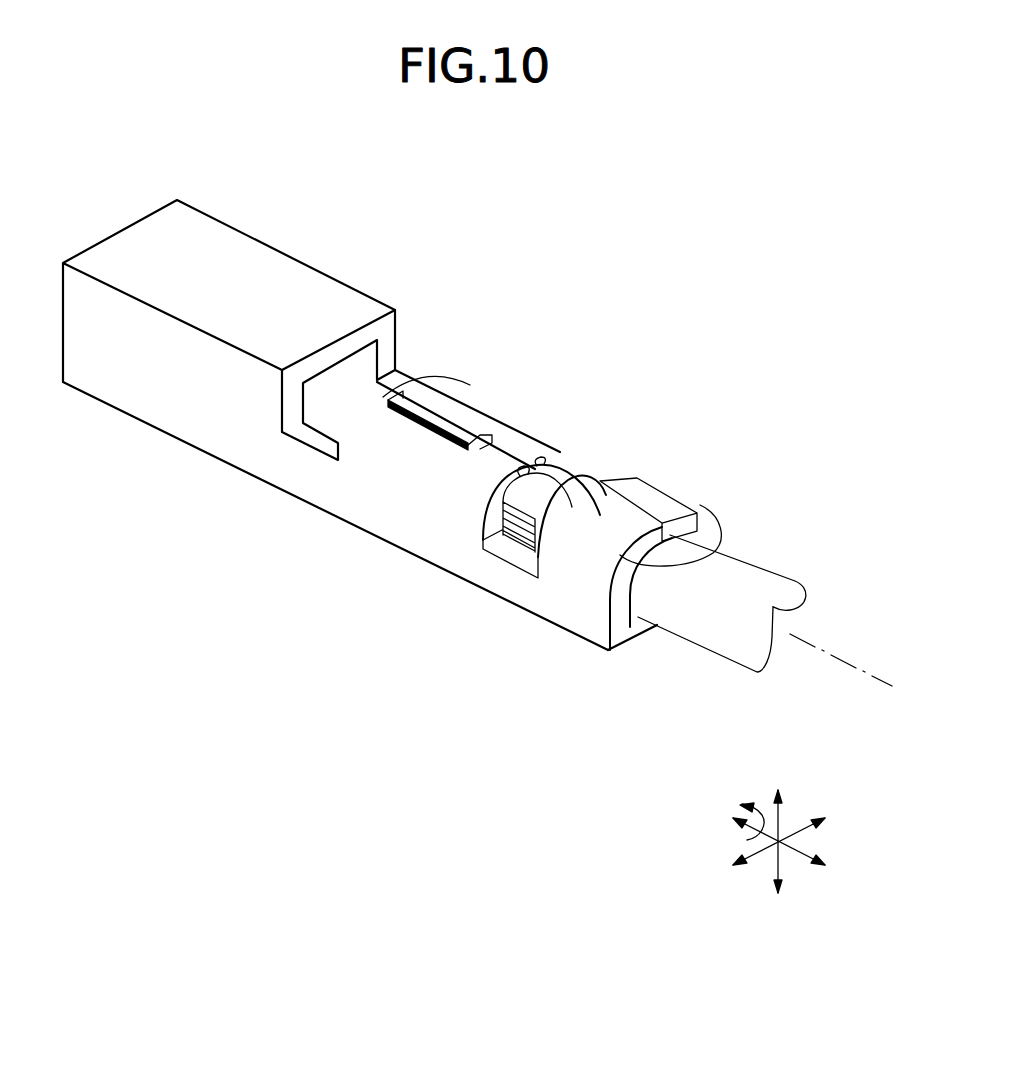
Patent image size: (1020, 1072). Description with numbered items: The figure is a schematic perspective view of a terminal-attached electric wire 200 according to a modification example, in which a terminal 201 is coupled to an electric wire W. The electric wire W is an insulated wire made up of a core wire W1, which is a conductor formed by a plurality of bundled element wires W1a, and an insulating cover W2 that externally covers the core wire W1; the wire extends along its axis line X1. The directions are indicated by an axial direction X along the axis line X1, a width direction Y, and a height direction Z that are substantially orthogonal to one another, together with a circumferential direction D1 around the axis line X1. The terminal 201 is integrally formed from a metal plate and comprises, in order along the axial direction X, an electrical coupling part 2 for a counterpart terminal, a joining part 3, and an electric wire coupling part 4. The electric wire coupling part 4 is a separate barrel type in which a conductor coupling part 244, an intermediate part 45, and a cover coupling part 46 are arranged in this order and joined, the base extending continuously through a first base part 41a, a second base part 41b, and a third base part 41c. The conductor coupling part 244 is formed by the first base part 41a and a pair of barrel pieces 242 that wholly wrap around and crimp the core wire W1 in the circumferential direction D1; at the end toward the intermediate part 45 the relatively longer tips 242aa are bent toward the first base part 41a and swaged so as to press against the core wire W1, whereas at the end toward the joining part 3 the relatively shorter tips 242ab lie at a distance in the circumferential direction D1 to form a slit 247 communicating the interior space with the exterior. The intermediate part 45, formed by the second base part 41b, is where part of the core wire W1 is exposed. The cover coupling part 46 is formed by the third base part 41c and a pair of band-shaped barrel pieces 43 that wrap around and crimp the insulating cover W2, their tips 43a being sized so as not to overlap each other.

The terminal-attached electric wire 200 is at (318, 186).
The terminal 201 is at (383, 715).
The electrical coupling part 2 is at (158, 395).
The joining part 3 is at (303, 455).
The electric wire coupling part 4 is at (254, 603).
The first base part 41a is at (397, 509).
The second base part 41b is at (505, 603).
The third base part 41c is at (612, 651).
The intermediate part 45 is at (500, 571).
The cover coupling part 46 is at (580, 606).
The pair of barrel pieces 242 is at (357, 450).
The slit 247 is at (423, 416).
The tips 242ab is at (462, 428).
The tips 242aa is at (530, 465).
The conductor coupling part 244 is at (393, 520).
The element wires W1a is at (512, 505).
The electric wire W is at (702, 292).
The core wire W1 is at (566, 474).
The insulating cover W2 is at (602, 476).
The pair of barrel pieces 43 is at (705, 528).
The tips 43a is at (637, 494).
The axis line X1 is at (836, 650).
The circumferential direction D1 is at (730, 832).
The axial direction X is at (805, 847).
The width direction Y is at (797, 820).
The height direction Z is at (772, 812).